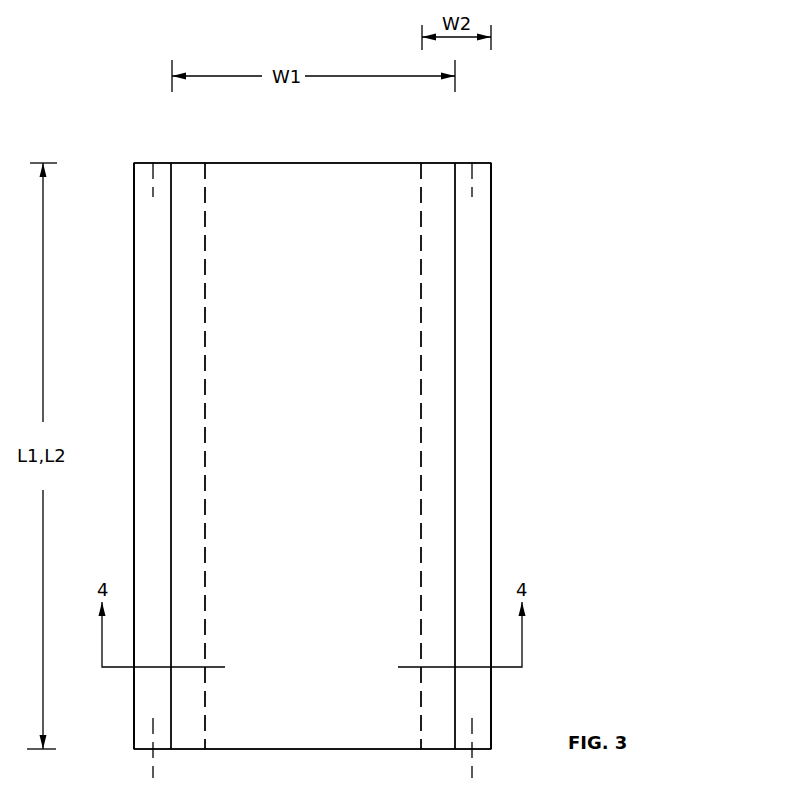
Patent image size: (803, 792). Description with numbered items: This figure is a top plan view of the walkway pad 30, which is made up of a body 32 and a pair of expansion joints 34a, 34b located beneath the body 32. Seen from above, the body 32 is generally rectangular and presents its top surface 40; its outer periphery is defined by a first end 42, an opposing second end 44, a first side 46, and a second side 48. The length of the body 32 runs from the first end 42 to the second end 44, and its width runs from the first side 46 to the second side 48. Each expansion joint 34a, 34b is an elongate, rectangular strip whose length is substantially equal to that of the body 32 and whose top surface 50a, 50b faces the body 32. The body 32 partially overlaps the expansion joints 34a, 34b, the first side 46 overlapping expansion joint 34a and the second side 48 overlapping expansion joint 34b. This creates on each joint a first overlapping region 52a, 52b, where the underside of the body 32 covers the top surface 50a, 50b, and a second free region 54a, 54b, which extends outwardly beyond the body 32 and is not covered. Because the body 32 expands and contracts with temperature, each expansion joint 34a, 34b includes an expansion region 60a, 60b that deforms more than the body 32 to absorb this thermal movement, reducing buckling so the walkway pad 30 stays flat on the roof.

The walkway pad 30 is at (514, 82).
The body 32 is at (365, 187).
The expansion joint 34a is at (148, 425).
The expansion joint 34b is at (472, 436).
The top surface 40 is at (327, 427).
The first end 42 is at (283, 163).
The second end 44 is at (222, 748).
The first side 46 is at (171, 514).
The second side 48 is at (455, 497).
The top surface 50a is at (161, 372).
The top surface 50b is at (469, 365).
The first overlapping region 52a is at (189, 175).
The first overlapping region 52b is at (438, 182).
The second free region 54a is at (155, 296).
The second free region 54b is at (474, 276).
The expansion region 60a is at (160, 174).
The expansion region 60b is at (462, 188).